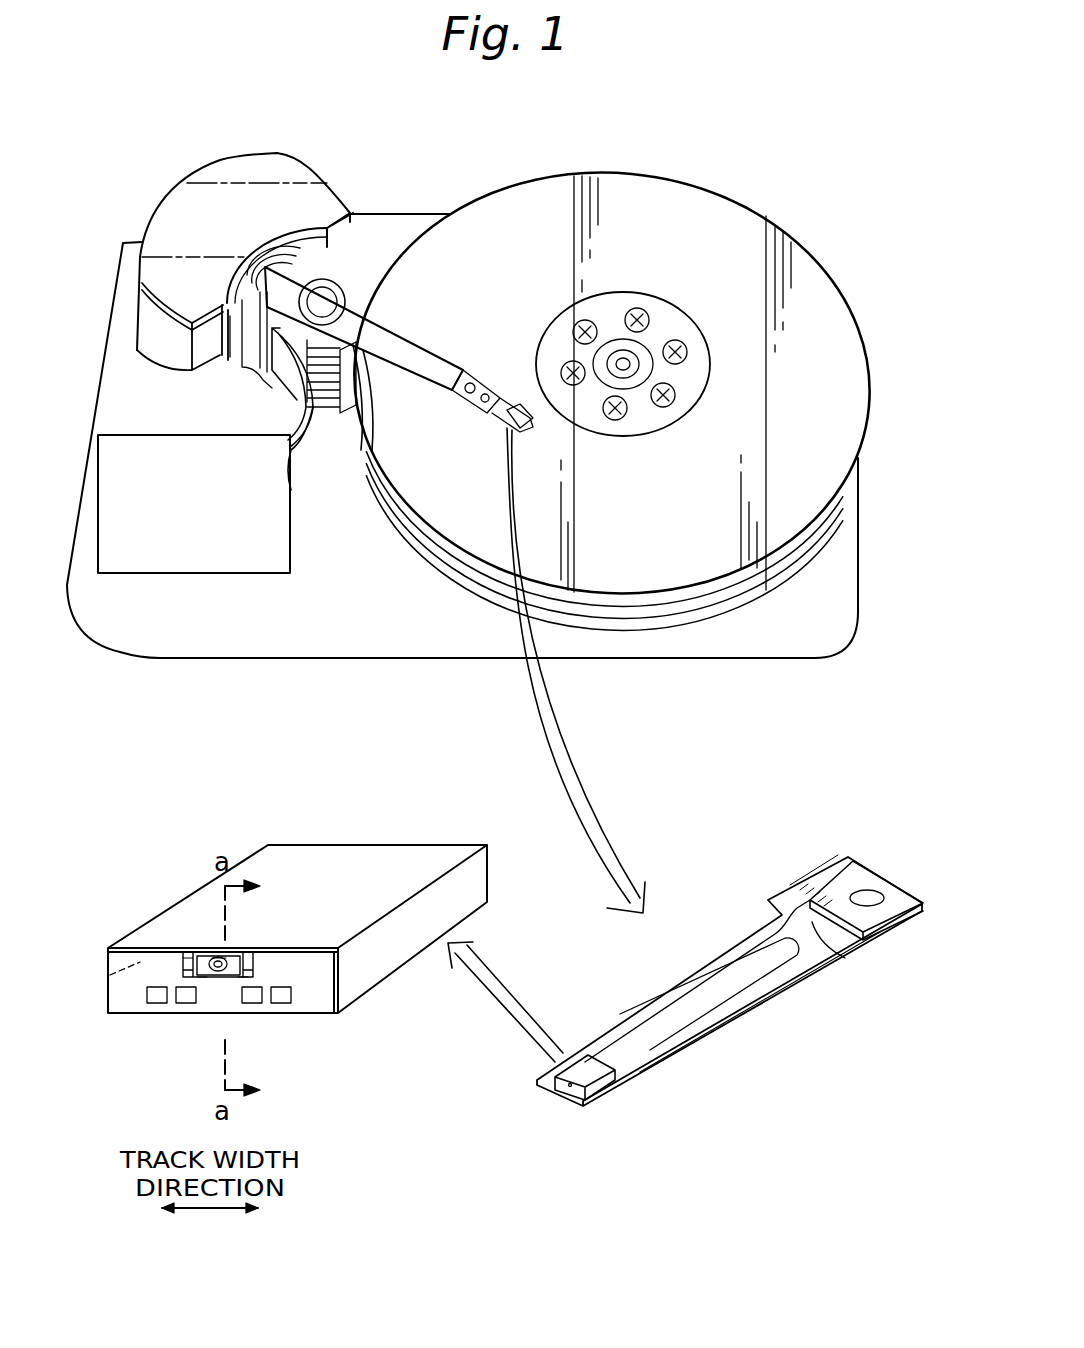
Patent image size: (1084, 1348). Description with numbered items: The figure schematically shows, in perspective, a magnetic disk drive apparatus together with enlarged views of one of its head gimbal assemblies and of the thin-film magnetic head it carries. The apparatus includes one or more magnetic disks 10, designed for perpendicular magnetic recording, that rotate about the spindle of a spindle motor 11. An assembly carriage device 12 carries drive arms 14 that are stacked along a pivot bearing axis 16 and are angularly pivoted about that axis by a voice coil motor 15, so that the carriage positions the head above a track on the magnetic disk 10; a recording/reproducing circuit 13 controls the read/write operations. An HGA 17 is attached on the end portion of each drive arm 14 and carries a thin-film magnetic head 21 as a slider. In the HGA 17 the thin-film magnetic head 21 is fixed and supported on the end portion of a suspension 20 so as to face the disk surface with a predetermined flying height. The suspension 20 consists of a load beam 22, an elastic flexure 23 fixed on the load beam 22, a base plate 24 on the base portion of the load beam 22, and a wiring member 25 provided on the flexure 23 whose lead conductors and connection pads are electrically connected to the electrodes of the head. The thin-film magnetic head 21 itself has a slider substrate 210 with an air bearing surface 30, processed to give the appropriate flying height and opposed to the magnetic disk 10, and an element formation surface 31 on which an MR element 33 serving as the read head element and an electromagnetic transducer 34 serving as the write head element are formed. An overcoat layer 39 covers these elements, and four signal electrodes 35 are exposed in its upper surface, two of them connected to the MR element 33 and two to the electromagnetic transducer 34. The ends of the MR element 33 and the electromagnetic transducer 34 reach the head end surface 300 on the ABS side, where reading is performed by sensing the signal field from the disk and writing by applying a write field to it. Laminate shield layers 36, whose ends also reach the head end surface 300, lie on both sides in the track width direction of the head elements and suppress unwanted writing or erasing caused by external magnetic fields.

The magnetic disk 10 is at (767, 221).
The spindle motor 11 is at (637, 363).
The assembly carriage device 12 is at (270, 176).
The recording/reproducing circuit 13 is at (192, 576).
The drive arm 14 is at (383, 332).
The voice coil motor 15 is at (237, 340).
The pivot bearing axis 16 is at (325, 302).
The HGA 17 is at (507, 410).
The suspension 20 is at (741, 940).
The thin-film magnetic head 21 is at (517, 424).
The load beam 22 is at (827, 962).
The flexure 23 is at (777, 963).
The base plate 24 is at (893, 908).
The wiring member 25 is at (693, 1023).
The air bearing surface 30 is at (296, 858).
The element formation surface 31 is at (120, 983).
The MR element 33 is at (228, 954).
The electromagnetic transducer 34 is at (200, 955).
The signal electrodes 35 is at (185, 1003).
The laminate shield layers 36 is at (246, 975).
The overcoat layer 39 is at (315, 995).
The slider substrate 210 is at (378, 963).
The head end surface 300 is at (286, 948).